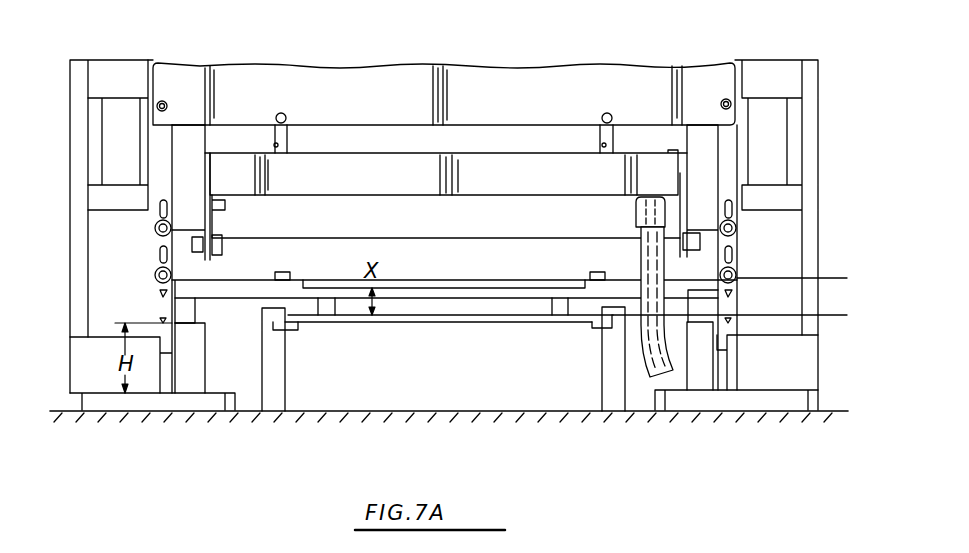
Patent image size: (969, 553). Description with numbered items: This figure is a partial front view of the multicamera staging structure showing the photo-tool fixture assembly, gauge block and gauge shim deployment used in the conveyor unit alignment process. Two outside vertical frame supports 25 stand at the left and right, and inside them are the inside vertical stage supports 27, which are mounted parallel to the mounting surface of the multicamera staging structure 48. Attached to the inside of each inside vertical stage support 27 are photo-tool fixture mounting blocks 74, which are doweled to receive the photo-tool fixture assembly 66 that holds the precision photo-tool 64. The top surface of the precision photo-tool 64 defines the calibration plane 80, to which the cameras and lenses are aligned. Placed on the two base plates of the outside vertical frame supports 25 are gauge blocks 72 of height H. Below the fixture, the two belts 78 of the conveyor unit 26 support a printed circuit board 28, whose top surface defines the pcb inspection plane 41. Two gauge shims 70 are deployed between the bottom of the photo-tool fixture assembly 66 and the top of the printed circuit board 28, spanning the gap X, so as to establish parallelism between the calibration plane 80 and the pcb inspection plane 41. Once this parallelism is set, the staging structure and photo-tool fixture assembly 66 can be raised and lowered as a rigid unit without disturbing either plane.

The outside vertical frame supports 25 is at (68, 72).
The inside vertical stage supports 27 is at (175, 148).
The photo-tool fixture assembly 66 is at (237, 280).
The precision photo-tool 64 is at (513, 278).
The calibration plane 80 is at (828, 273).
The pcb inspection plane 41 is at (833, 313).
The printed circuit board 28 is at (463, 323).
The gauge shims 70 is at (337, 305).
The photo-tool fixture mounting blocks 74 is at (197, 321).
The gauge blocks 72 is at (205, 360).
The conveyor unit 26 is at (290, 380).
The belts 78 is at (590, 331).
The mounting surface of multicamera staging structure 48 is at (828, 407).